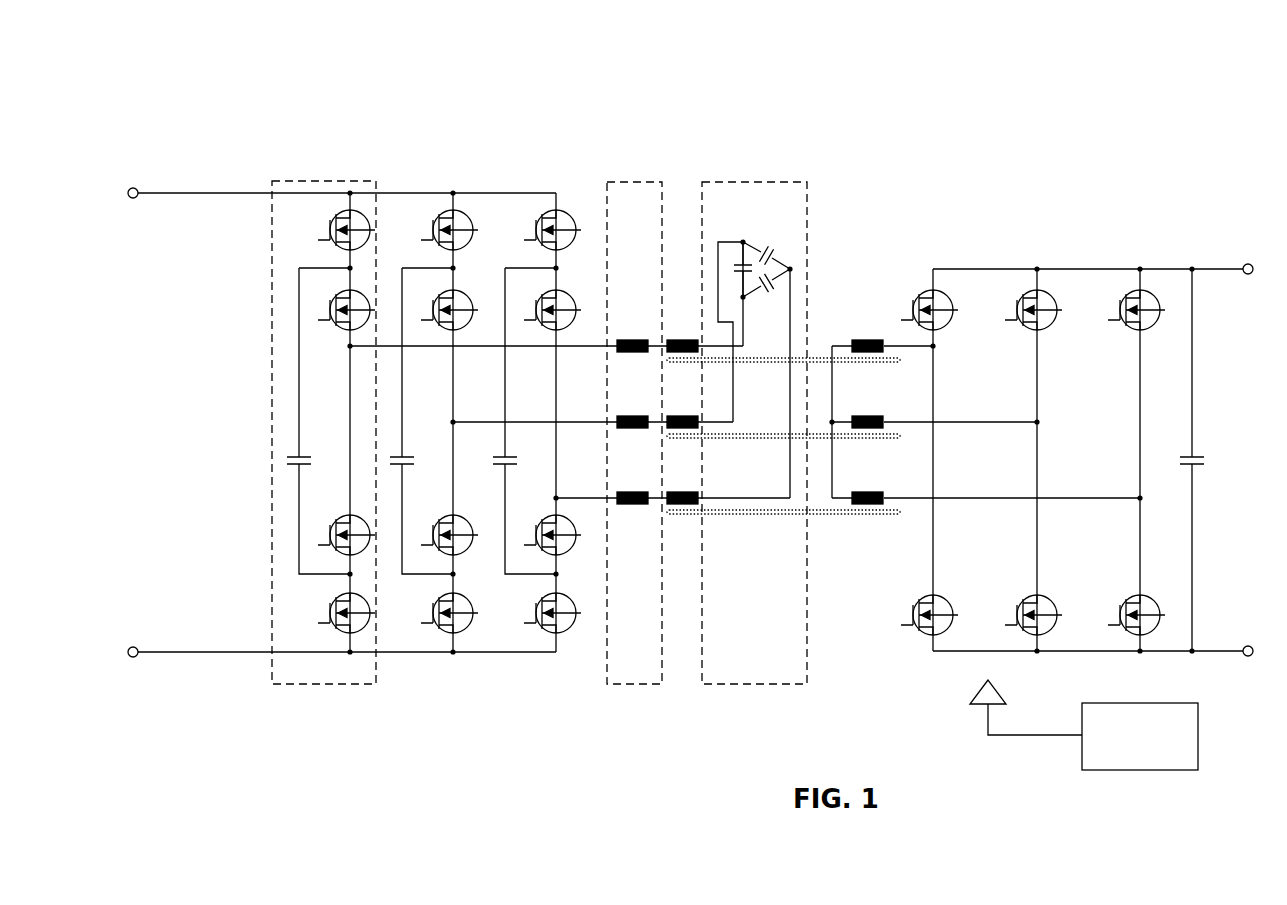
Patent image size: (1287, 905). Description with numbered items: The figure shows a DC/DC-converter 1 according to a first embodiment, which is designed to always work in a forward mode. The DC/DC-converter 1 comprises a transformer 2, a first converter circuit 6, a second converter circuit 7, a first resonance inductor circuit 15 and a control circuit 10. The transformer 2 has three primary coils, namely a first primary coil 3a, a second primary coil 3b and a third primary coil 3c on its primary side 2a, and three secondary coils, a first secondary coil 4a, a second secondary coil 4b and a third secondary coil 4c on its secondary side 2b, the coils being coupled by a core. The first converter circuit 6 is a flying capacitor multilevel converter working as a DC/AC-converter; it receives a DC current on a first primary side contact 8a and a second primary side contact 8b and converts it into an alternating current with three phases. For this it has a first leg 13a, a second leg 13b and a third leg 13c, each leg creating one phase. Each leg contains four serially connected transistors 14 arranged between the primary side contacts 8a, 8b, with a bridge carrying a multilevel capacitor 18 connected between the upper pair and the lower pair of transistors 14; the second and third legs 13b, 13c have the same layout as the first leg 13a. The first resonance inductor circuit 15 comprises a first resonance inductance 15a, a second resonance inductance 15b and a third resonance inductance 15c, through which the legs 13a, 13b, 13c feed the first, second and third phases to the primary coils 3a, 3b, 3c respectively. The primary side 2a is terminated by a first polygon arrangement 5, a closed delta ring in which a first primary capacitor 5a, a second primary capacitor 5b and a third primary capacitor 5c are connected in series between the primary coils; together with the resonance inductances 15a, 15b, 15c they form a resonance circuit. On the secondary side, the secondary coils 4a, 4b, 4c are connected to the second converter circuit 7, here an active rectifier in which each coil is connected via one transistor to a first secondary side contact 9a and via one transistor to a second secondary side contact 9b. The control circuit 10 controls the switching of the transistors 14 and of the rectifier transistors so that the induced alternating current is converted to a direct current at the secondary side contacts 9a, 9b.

The DC/DC-converter 1 is at (1200, 110).
The transformer 2 is at (858, 672).
The primary side 2a is at (700, 170).
The secondary side 2b is at (910, 170).
The first primary coil 3a is at (682, 340).
The second primary coil 3b is at (682, 416).
The third primary coil 3c is at (682, 492).
The first secondary coil 4a is at (868, 340).
The second secondary coil 4b is at (868, 416).
The third secondary coil 4c is at (868, 492).
The first polygon arrangement 5 is at (808, 170).
The first primary capacitor 5a is at (740, 264).
The second primary capacitor 5b is at (791, 266).
The third primary capacitor 5c is at (766, 252).
The first converter circuit 6 is at (557, 170).
The second converter circuit 7 is at (927, 170).
The first primary side contact 8a is at (133, 187).
The second primary side contact 8b is at (133, 646).
The first secondary side contact 9a is at (1249, 264).
The second secondary side contact 9b is at (1249, 646).
The control circuit 10 is at (1198, 742).
The first leg 13a is at (302, 471).
The second leg 13b is at (417, 668).
The third leg 13c is at (518, 668).
The transistors 14 is at (318, 240).
The first resonance inductor circuit 15 is at (661, 170).
The first resonance inductance 15a is at (634, 340).
The second resonance inductance 15b is at (634, 416).
The third resonance inductance 15c is at (634, 492).
The multilevel capacitor 18 is at (292, 456).